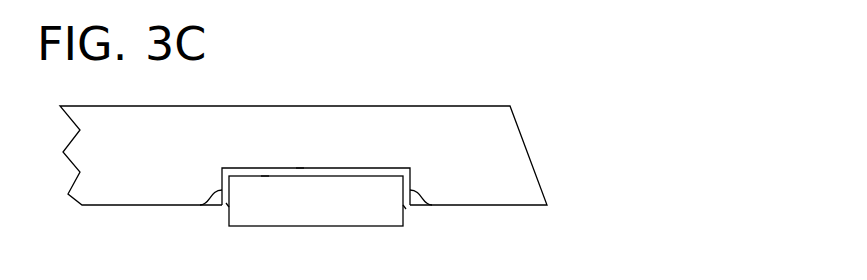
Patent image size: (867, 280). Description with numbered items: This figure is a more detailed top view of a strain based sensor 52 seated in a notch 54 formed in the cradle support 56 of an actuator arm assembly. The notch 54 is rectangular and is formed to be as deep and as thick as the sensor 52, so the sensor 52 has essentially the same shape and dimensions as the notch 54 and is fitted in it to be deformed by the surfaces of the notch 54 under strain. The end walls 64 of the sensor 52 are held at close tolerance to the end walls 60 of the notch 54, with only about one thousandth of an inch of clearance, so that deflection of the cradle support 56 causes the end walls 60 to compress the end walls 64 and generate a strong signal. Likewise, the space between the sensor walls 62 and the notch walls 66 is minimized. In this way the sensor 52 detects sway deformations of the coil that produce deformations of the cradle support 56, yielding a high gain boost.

The strain based sensor 52 is at (298, 233).
The notch 54 is at (355, 163).
The cradle support 56 is at (483, 198).
The end walls of the notch 60 is at (200, 205).
The sensor walls 62 is at (265, 176).
The end walls of the sensor 64 is at (226, 203).
The notch walls 66 is at (300, 168).